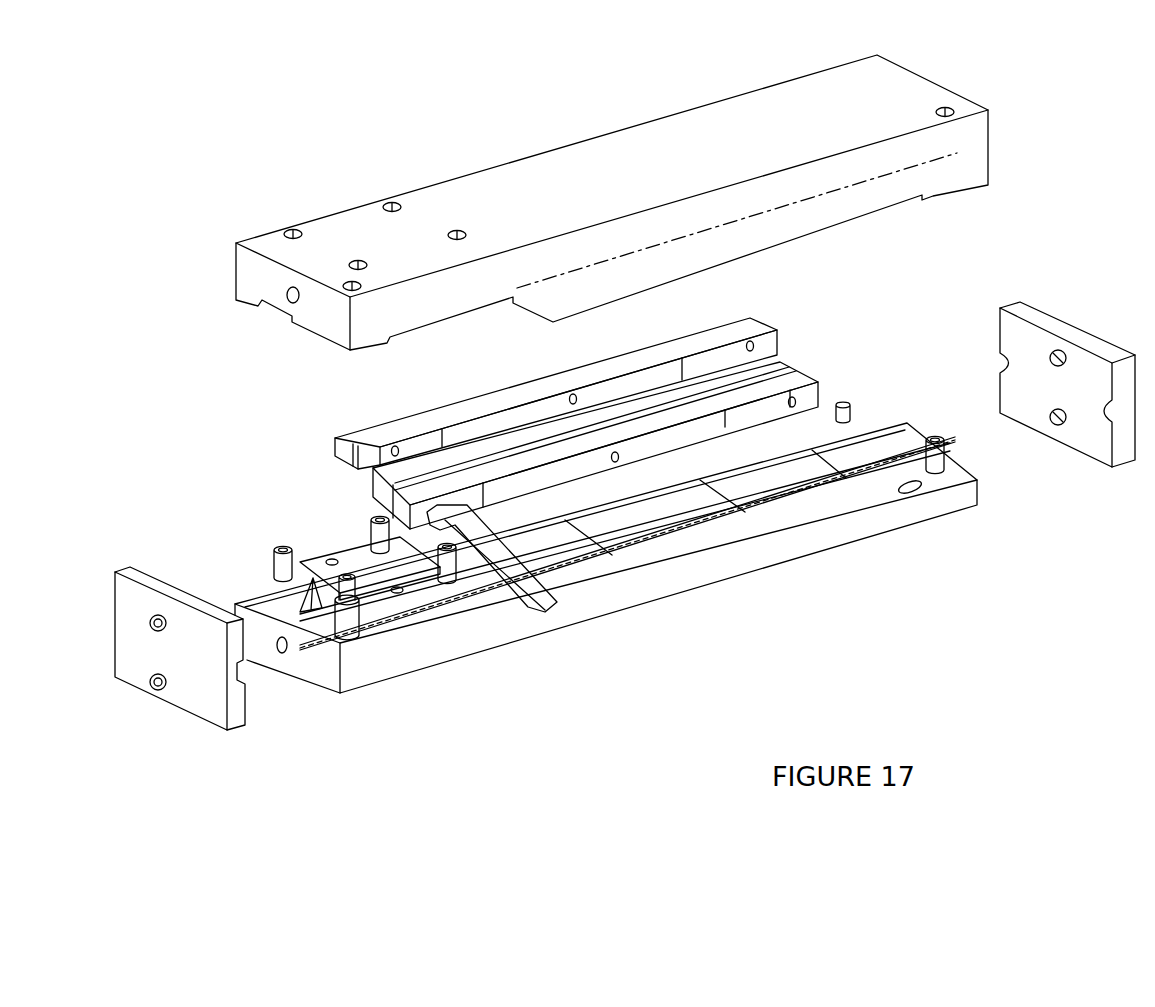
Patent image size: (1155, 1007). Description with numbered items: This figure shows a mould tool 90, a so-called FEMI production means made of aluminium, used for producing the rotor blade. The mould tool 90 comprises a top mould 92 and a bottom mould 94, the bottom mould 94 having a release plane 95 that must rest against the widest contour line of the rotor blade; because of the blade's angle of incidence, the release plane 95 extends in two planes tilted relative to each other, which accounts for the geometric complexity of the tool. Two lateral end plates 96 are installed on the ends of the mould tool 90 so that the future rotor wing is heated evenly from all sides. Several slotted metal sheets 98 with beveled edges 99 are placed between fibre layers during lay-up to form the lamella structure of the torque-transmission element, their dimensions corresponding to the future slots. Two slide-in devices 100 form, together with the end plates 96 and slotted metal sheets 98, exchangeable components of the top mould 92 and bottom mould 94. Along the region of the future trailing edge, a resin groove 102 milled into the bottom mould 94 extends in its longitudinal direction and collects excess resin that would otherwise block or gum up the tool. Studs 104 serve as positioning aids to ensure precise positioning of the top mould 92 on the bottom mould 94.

The mould tool 90 is at (196, 468).
The top mould 92 is at (912, 80).
The bottom mould 94 is at (887, 517).
The release plane 95 is at (715, 540).
The end plate 96 is at (238, 717).
The slotted metal sheet 98 is at (358, 556).
The beveled edge 99 is at (313, 580).
The slide-in device 100 is at (745, 320).
The resin groove 102 is at (815, 497).
The stud 104 is at (843, 412).